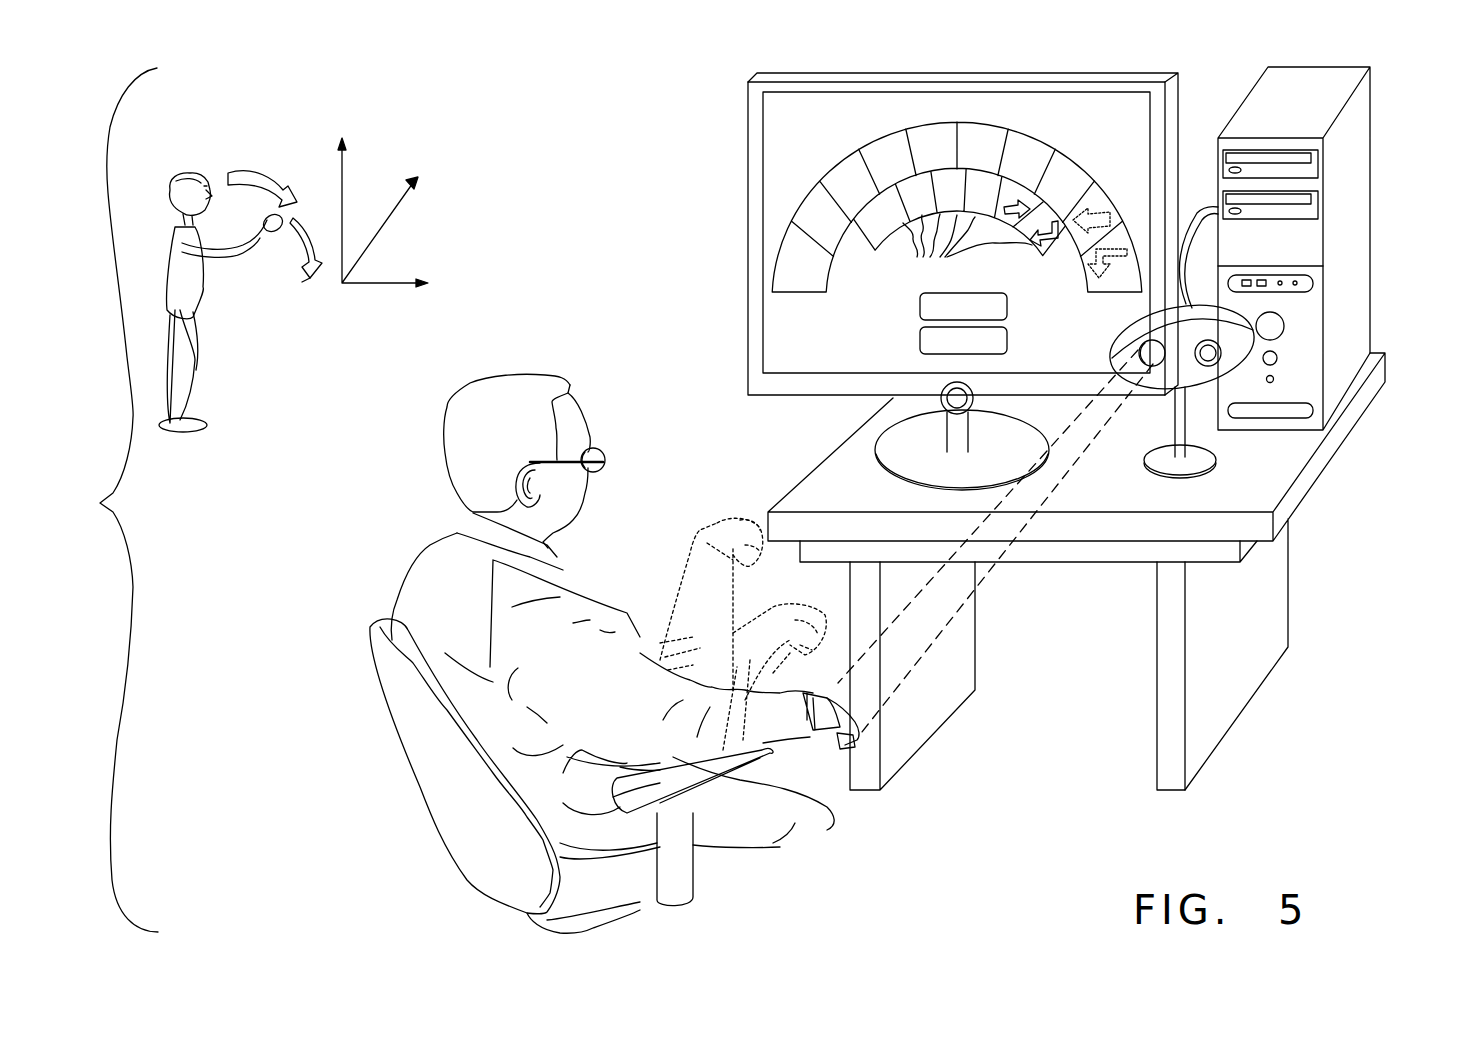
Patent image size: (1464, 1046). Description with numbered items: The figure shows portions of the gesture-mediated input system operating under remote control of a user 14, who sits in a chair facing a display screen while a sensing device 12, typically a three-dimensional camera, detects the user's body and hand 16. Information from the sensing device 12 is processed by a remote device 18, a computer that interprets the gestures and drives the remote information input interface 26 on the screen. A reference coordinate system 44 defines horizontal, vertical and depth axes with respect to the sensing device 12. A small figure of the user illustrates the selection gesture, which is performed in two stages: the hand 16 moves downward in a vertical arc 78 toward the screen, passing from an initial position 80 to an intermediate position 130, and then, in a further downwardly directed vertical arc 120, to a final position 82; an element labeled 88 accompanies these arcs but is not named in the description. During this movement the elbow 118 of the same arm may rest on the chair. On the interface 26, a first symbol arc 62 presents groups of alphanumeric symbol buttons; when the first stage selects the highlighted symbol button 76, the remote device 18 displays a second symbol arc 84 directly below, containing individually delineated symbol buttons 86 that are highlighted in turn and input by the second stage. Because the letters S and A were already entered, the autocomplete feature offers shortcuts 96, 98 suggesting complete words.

The sensing device 12 is at (1284, 350).
The user 14 is at (522, 360).
The hand 16 is at (837, 752).
The remote device 18 is at (1370, 113).
The remote information input interface 26 is at (763, 142).
The reference coordinate system 44 is at (342, 167).
The first symbol arc 62 is at (786, 218).
The highlighted symbol button 76 is at (935, 119).
The vertical arc 78 is at (218, 177).
The initial position 80 is at (710, 523).
The final position 82 is at (827, 692).
The second symbol arc 84 is at (1040, 254).
The individually delineated symbol buttons 86 is at (967, 248).
The gesture motion arrows 88 is at (255, 168).
The shortcut 96 is at (920, 306).
The shortcut 98 is at (920, 340).
The elbow 118 is at (795, 823).
The vertical arc 120 is at (308, 288).
The intermediate position 130 is at (802, 608).